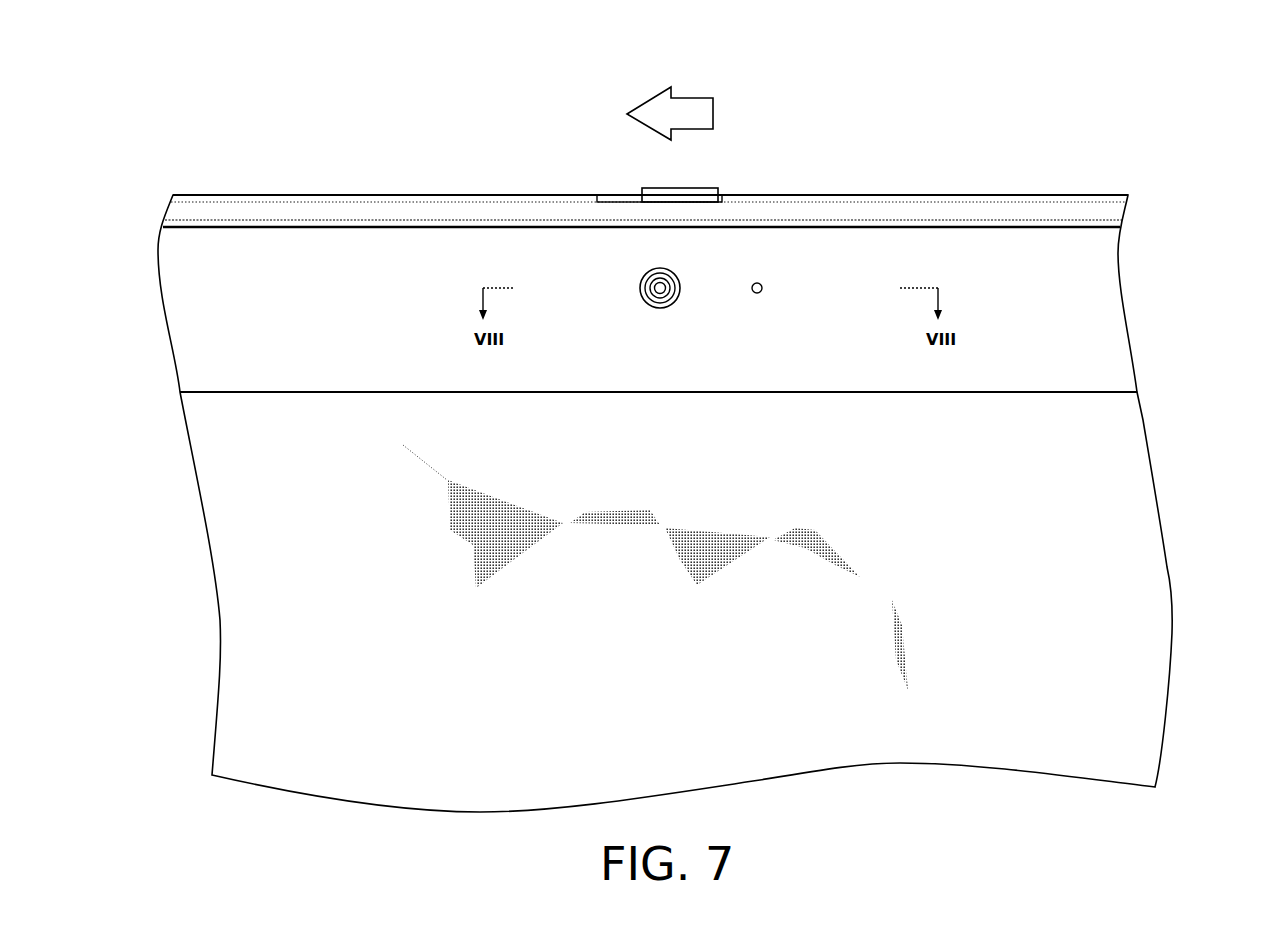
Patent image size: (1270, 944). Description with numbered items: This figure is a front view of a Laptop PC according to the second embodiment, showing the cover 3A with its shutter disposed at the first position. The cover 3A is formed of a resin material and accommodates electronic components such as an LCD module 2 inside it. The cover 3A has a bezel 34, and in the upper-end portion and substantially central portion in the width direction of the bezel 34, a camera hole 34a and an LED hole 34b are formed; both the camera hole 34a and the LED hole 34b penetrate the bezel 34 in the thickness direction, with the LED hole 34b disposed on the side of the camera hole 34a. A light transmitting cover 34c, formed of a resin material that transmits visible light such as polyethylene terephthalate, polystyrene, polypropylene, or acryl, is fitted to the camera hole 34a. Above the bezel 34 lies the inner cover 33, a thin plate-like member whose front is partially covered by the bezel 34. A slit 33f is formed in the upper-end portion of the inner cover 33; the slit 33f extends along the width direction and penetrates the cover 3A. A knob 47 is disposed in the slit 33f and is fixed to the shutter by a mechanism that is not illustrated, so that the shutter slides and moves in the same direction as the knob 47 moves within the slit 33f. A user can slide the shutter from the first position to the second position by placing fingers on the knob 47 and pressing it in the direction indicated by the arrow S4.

The LCD module 2 is at (1143, 567).
The cover 3A is at (176, 160).
The inner cover 33 is at (1110, 212).
The slit 33f is at (622, 194).
The bezel 34 is at (1105, 318).
The camera hole 34a is at (666, 308).
The LED hole 34b is at (763, 281).
The light transmitting cover 34c is at (651, 278).
The knob 47 is at (695, 190).
The arrow S4 is at (696, 97).